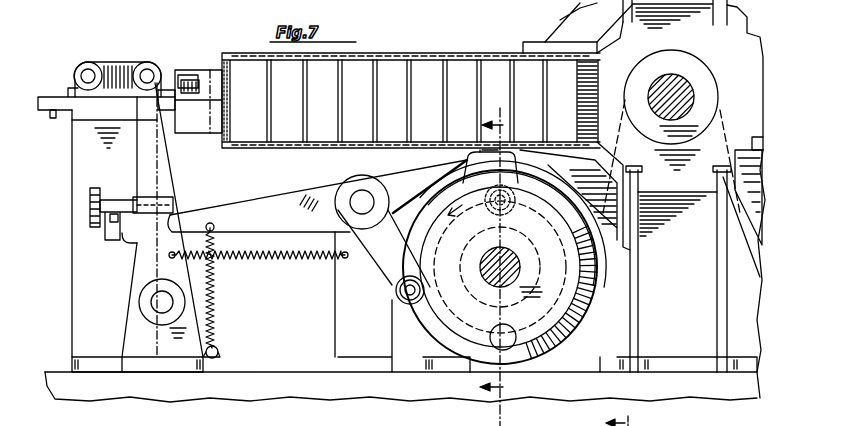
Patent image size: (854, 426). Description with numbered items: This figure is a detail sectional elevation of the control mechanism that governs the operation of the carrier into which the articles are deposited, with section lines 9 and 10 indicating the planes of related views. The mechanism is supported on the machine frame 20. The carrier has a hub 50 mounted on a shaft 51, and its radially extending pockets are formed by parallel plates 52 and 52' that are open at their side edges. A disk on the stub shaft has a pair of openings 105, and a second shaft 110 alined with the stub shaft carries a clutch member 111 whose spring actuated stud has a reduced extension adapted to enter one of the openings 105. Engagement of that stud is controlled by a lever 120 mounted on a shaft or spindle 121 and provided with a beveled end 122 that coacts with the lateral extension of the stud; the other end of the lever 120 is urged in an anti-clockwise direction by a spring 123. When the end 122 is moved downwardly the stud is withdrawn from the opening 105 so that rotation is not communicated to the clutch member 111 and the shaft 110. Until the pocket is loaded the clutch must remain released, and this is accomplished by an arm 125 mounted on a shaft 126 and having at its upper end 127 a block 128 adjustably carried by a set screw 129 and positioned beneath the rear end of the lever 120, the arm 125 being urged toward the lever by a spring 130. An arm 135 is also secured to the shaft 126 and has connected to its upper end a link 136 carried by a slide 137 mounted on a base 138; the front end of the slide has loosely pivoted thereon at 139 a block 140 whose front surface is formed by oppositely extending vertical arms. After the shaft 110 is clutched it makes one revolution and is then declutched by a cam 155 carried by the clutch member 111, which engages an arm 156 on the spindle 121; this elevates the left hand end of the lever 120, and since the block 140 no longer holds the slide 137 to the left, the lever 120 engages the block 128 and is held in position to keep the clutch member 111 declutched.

The section line 9- 9 is at (624, 421).
The section line 10- 10 is at (504, 267).
The frame 20 is at (293, 398).
The hub 50 is at (628, 81).
The shaft 51 is at (688, 93).
The parallel plate 52 is at (411, 116).
The parallel plate 52' is at (513, 28).
The opening 105 is at (498, 343).
The second shaft 110 is at (527, 275).
The clutch member 111 is at (585, 318).
The lever 120 is at (303, 193).
The shaft or spindle 121 is at (362, 196).
The beveled end 122 is at (482, 152).
The spring 123 is at (215, 300).
The arm 125 is at (143, 262).
The shaft 126 is at (152, 302).
The upper end 127 is at (140, 245).
The block 128 is at (143, 200).
The set screw 129 is at (90, 206).
The spring 130 is at (278, 258).
The arm 135 is at (147, 164).
The link 136 is at (115, 68).
The slide 137 is at (58, 97).
The base 138 is at (75, 113).
The pivot 139 is at (185, 75).
The block 140 is at (200, 70).
The cam 155 is at (447, 200).
The arm 156 is at (397, 290).